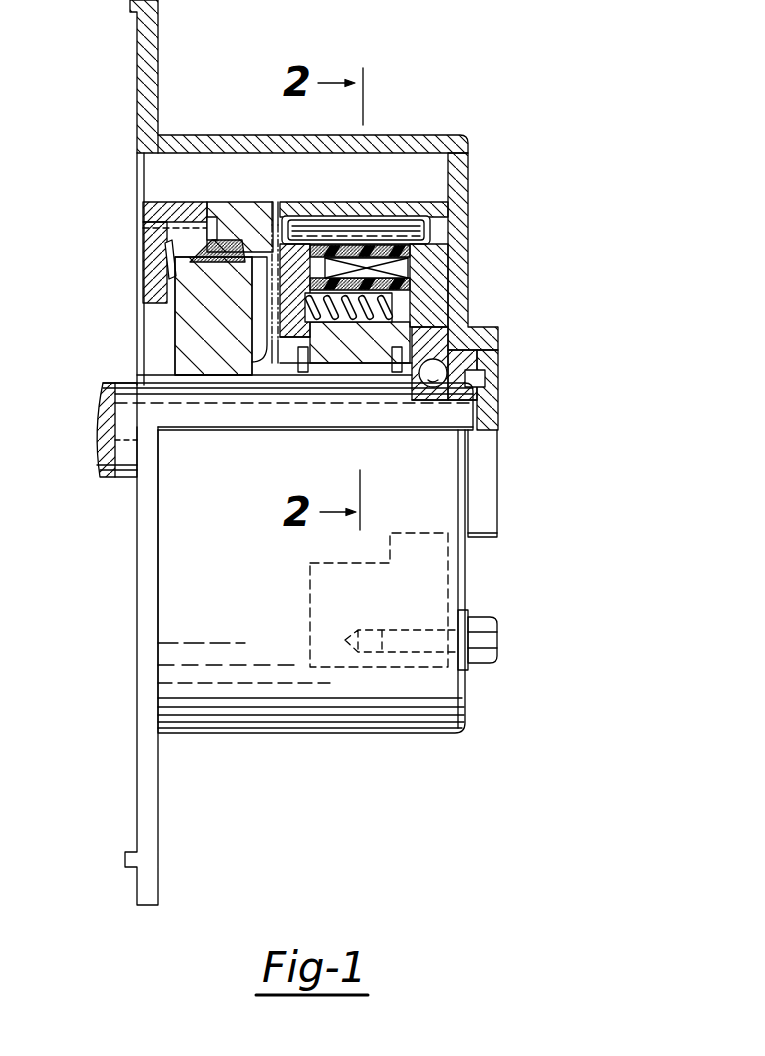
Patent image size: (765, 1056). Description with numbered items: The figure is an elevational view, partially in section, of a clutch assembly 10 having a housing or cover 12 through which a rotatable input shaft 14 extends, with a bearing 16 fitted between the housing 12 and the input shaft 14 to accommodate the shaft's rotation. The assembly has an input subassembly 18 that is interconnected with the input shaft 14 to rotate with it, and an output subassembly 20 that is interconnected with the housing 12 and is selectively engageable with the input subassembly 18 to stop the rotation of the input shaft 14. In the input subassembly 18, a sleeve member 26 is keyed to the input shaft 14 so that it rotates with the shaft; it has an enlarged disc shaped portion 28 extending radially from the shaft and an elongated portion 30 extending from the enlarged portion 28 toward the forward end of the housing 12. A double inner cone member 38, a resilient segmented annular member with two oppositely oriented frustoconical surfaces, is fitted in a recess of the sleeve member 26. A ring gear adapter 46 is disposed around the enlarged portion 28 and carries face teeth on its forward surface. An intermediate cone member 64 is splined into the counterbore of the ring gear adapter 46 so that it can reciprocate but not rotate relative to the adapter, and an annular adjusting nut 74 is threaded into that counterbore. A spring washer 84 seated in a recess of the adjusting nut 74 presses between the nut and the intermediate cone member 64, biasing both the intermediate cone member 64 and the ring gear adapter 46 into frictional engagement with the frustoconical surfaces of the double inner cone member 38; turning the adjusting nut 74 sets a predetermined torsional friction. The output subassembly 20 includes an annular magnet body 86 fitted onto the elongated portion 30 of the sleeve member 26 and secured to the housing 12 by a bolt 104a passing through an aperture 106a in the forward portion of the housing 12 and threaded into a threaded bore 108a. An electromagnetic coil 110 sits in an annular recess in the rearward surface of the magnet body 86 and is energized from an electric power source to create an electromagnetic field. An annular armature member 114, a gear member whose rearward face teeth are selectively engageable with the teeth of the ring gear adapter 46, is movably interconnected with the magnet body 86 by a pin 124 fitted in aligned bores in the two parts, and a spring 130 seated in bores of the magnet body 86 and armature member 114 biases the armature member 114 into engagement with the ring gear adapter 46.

The clutch assembly 10 is at (310, 452).
The housing 12 is at (460, 293).
The input shaft 14 is at (103, 404).
The bearing 16 is at (477, 372).
The input subassembly 18 is at (196, 186).
The output subassembly 20 is at (385, 184).
The sleeve member 26 is at (207, 362).
The enlarged disc shaped portion 28 is at (193, 338).
The elongated portion 30 is at (294, 372).
The double inner cone member 38 is at (160, 300).
The ring gear adapter 46 is at (247, 203).
The intermediate cone member 64 is at (190, 228).
The adjusting nut 74 is at (152, 360).
The spring washer 84 is at (165, 262).
The annular magnet body 86 is at (438, 290).
The bolt 104a is at (490, 641).
The aperture 106a is at (475, 622).
The threaded bore 108a is at (413, 648).
The electromagnetic coil 110 is at (418, 262).
The annular armature member 114 is at (297, 203).
The pin 124 is at (387, 207).
The spring 130 is at (367, 317).